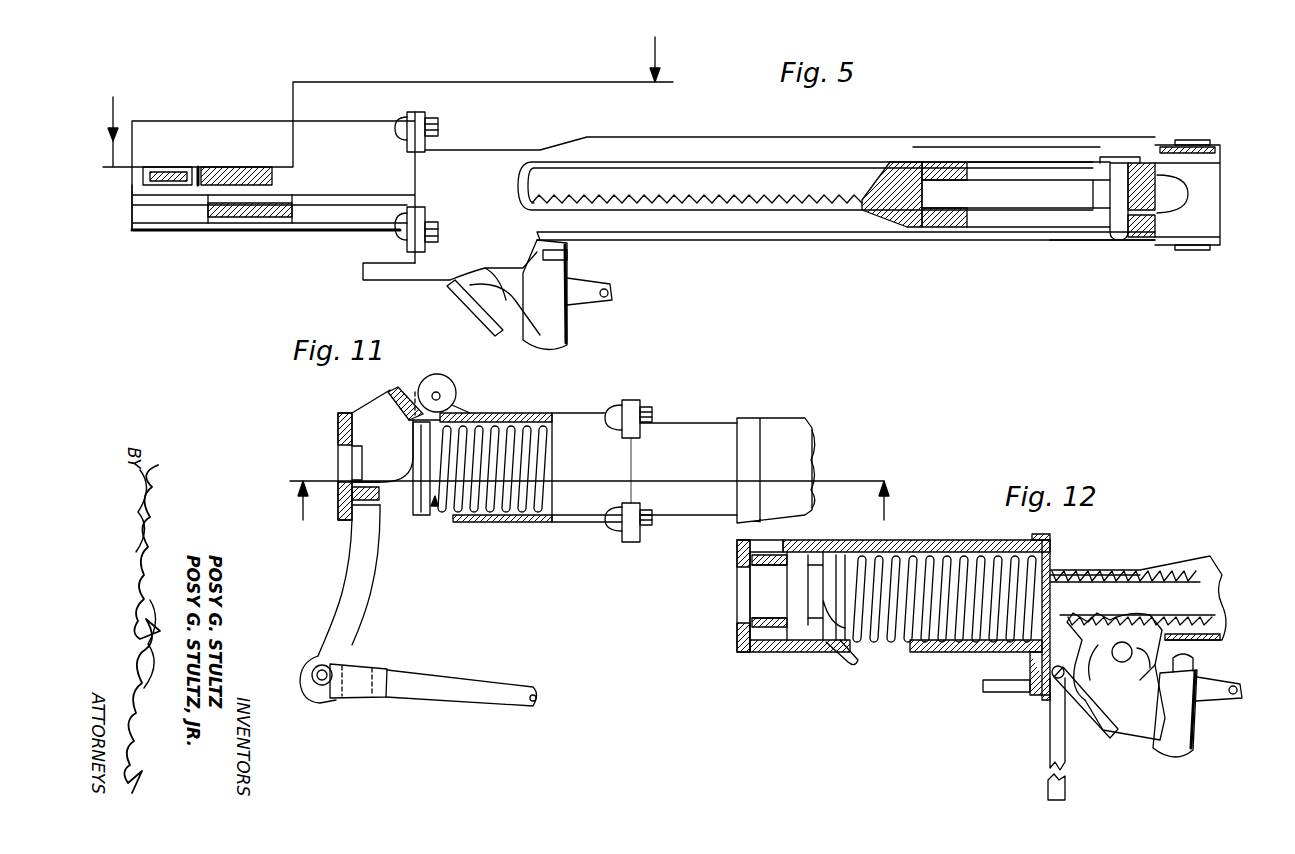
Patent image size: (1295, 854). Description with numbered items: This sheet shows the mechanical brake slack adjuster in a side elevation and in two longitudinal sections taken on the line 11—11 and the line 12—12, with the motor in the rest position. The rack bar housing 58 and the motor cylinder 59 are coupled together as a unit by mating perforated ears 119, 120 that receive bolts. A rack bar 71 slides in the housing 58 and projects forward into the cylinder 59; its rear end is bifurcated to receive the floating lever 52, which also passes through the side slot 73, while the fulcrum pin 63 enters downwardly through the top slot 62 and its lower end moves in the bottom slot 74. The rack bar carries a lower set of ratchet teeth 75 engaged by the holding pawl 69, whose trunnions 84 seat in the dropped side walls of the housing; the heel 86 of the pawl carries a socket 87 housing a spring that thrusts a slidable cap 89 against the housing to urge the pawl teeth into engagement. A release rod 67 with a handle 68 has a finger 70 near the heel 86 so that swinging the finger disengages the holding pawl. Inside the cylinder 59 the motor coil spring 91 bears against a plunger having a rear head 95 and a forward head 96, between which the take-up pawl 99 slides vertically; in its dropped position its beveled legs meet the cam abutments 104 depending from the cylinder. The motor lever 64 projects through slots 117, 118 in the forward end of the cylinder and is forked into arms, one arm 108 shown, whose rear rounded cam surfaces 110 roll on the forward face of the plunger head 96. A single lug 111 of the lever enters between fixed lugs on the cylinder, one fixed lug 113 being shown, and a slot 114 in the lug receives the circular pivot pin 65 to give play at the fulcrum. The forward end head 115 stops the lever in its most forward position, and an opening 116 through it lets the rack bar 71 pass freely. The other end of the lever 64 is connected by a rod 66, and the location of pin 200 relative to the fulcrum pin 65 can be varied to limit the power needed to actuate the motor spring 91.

In FIG. 5, the section line 11- 11 is at (388, 98).
In FIG. 11, the section line 12- 12 is at (591, 483).
In FIG. 5, the floating lever 52 is at (1090, 184).
In FIG. 5, the rack bar housing 58 is at (770, 139).
In FIG. 11, the rack bar housing 58 is at (697, 436).
In FIG. 12, the rack bar housing 58 is at (1100, 570).
In FIG. 5, the motor cylinder 59 is at (352, 163).
In FIG. 11, the motor cylinder 59 is at (589, 523).
In FIG. 12, the motor cylinder 59 is at (937, 540).
In FIG. 5, the top slot 62 is at (1012, 145).
In FIG. 5, the fulcrum pin 63 is at (1129, 165).
In FIG. 11, the motor lever 64 is at (350, 581).
In FIG. 11, the fulcrum point 65 is at (446, 392).
In FIG. 11, the rod 66 is at (440, 698).
In FIG. 12, the release rod 67 is at (1042, 696).
In FIG. 12, the handle 68 is at (1050, 730).
In FIG. 12, the holding pawl 69 is at (1104, 650).
In FIG. 5, the finger 70 is at (460, 292).
In FIG. 12, the finger 70 is at (1112, 741).
In FIG. 5, the rack bar 71 is at (882, 232).
In FIG. 12, the rack bar 71 is at (1198, 610).
In FIG. 5, the side slot 73 is at (1166, 200).
In FIG. 5, the bottom slot 74 is at (1070, 240).
In FIG. 5, the lower set of ratchet teeth 75 is at (781, 205).
In FIG. 12, the trunnions 84 is at (1125, 702).
In FIG. 5, the heel 86 is at (515, 316).
In FIG. 12, the heel 86 is at (1138, 718).
In FIG. 5, the socket 87 is at (561, 340).
In FIG. 12, the socket 87 is at (1191, 740).
In FIG. 5, the slidable cap 89 is at (569, 270).
In FIG. 12, the slidable cap 89 is at (1195, 668).
In FIG. 5, the motor coil spring 91 is at (270, 218).
In FIG. 11, the motor coil spring 91 is at (497, 519).
In FIG. 12, the motor coil spring 91 is at (970, 644).
In FIG. 5, the rear head 95 is at (224, 165).
In FIG. 11, the rear head 95 is at (456, 519).
In FIG. 5, the forward head 96 is at (197, 167).
In FIG. 11, the forward head 96 is at (420, 517).
In FIG. 12, the forward head 96 is at (822, 620).
In FIG. 5, the take-up pawl 99 is at (212, 156).
In FIG. 11, the take-up pawl 99 is at (434, 518).
In FIG. 12, the take-up pawl 99 is at (836, 558).
In FIG. 12, the cam abutments 104 is at (855, 654).
In FIG. 11, the arm 108 is at (392, 438).
In FIG. 11, the cam surfaces 110 is at (411, 449).
In FIG. 12, the cam surfaces 110 is at (800, 560).
In FIG. 11, the lug 111 is at (412, 386).
In FIG. 11, the fixed lug 113 is at (466, 412).
In FIG. 11, the slot 114 is at (437, 388).
In FIG. 5, the forward end head 115 is at (136, 190).
In FIG. 11, the forward end head 115 is at (340, 415).
In FIG. 12, the forward end head 115 is at (740, 640).
In FIG. 11, the opening 116 is at (335, 463).
In FIG. 12, the opening 116 is at (736, 600).
In FIG. 11, the slot 117 is at (391, 512).
In FIG. 11, the slot 118 is at (489, 420).
In FIG. 5, the ear 119 is at (410, 114).
In FIG. 11, the ear 119 is at (627, 401).
In FIG. 5, the ear 120 is at (433, 118).
In FIG. 11, the ear 120 is at (645, 406).
In FIG. 11, the pin 200 is at (330, 676).